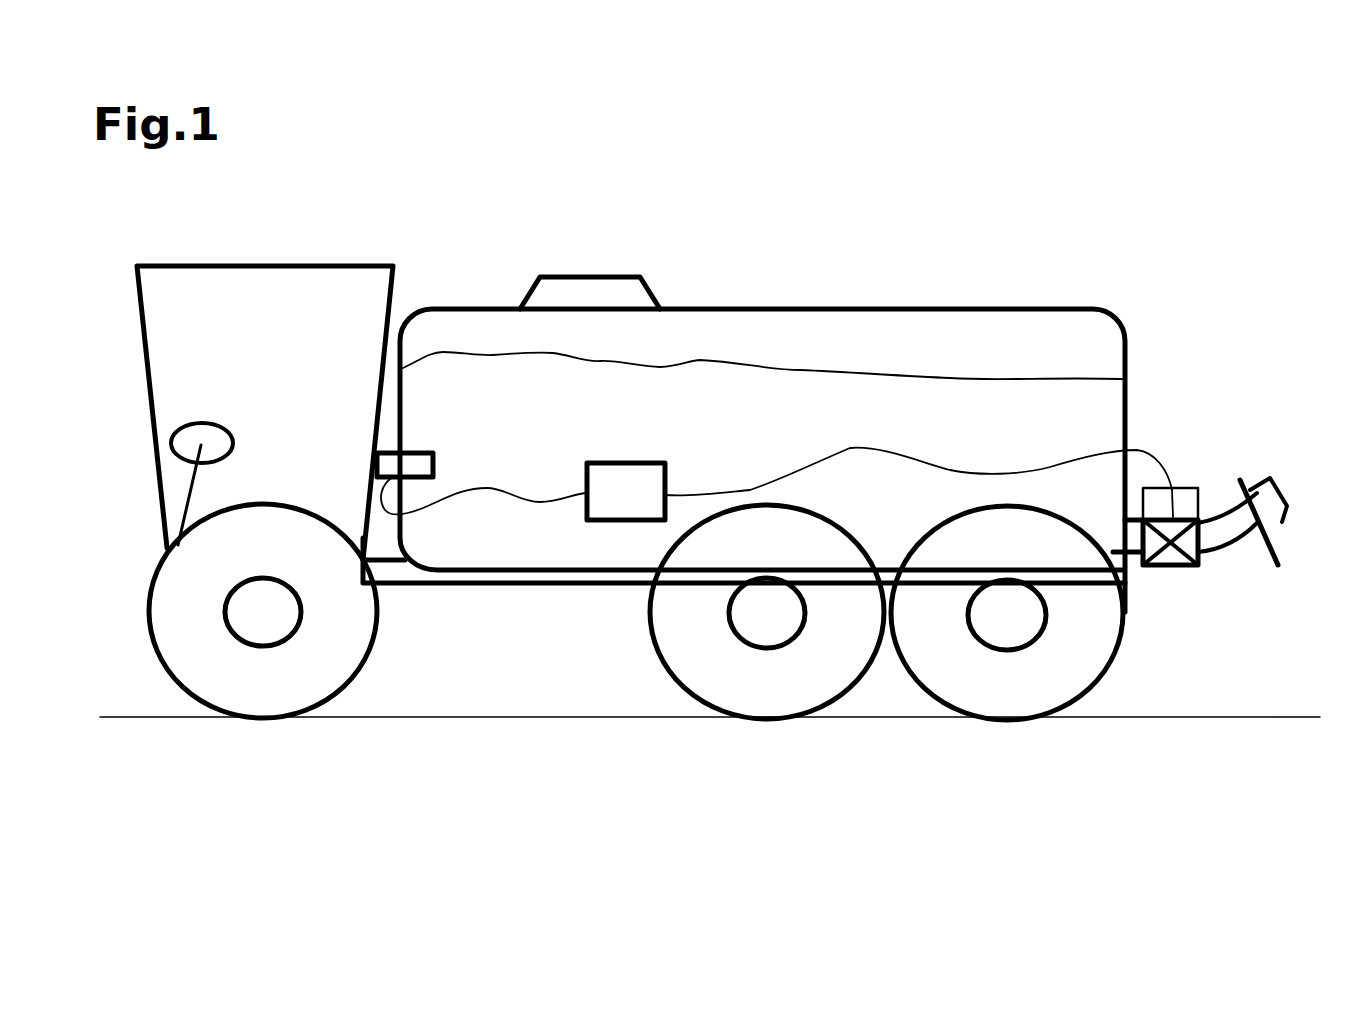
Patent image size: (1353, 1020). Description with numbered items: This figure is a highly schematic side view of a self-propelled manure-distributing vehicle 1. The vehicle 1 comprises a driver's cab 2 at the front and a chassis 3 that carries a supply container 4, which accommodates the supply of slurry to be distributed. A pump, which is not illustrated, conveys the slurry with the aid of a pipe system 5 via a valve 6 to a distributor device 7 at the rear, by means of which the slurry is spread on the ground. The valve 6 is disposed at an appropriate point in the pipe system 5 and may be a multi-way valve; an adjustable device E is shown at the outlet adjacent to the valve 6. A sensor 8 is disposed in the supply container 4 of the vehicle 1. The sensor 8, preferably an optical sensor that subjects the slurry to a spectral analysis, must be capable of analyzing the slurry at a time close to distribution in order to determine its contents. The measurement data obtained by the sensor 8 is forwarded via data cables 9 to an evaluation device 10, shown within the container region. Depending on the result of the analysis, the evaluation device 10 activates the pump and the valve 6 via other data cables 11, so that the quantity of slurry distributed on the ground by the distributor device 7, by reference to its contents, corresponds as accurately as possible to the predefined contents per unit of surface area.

The manure-distributing vehicle 1 is at (586, 632).
The driver's cab 2 is at (259, 361).
The chassis 3 is at (395, 573).
The supply container 4 is at (783, 308).
The pipe system 5 is at (1131, 555).
The valve 6 is at (1173, 558).
The distributor device 7 is at (1278, 546).
The sensor 8 is at (422, 458).
The data cables 9 is at (475, 500).
The evaluation device 10 is at (626, 491).
The data cables 11 is at (868, 447).
The adjustable device E is at (1183, 497).